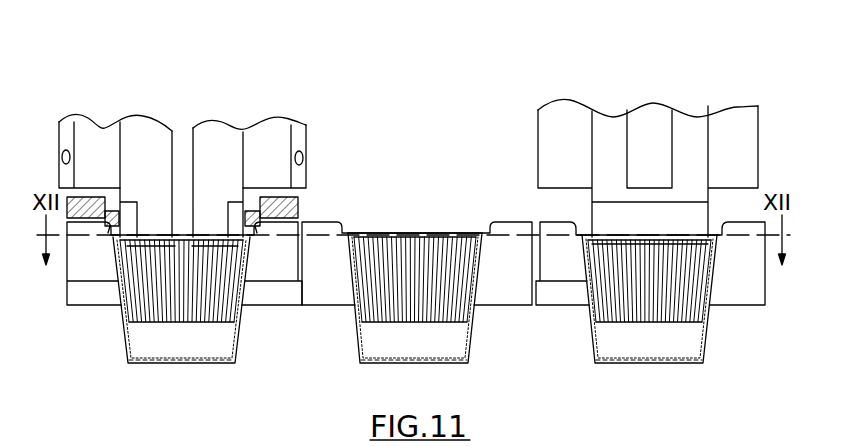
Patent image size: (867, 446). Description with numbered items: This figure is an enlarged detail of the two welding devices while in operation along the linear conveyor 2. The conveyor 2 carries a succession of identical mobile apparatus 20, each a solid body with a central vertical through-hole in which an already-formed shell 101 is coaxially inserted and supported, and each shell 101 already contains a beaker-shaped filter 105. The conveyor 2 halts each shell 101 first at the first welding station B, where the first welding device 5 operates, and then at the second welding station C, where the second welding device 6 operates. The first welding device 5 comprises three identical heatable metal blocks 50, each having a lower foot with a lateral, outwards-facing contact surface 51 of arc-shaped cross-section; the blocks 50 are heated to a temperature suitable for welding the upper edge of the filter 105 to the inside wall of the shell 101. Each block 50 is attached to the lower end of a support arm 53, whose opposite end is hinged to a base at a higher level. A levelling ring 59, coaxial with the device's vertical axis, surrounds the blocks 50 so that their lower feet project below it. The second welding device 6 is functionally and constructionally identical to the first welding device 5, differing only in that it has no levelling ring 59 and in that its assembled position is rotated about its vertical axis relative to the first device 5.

The linear conveyor 2 is at (488, 215).
The first welding device 5 is at (400, 192).
The second welding device 6 is at (664, 97).
The mobile apparatus 20 is at (88, 295).
The heatable metal block 50 is at (133, 150).
The contact surface 51 is at (415, 341).
The support arm 53 is at (660, 135).
The levelling ring 59 is at (298, 207).
The shell 101 is at (127, 342).
The beaker-shaped filter 105 is at (187, 323).
The first welding station B is at (253, 380).
The second welding station C is at (582, 354).